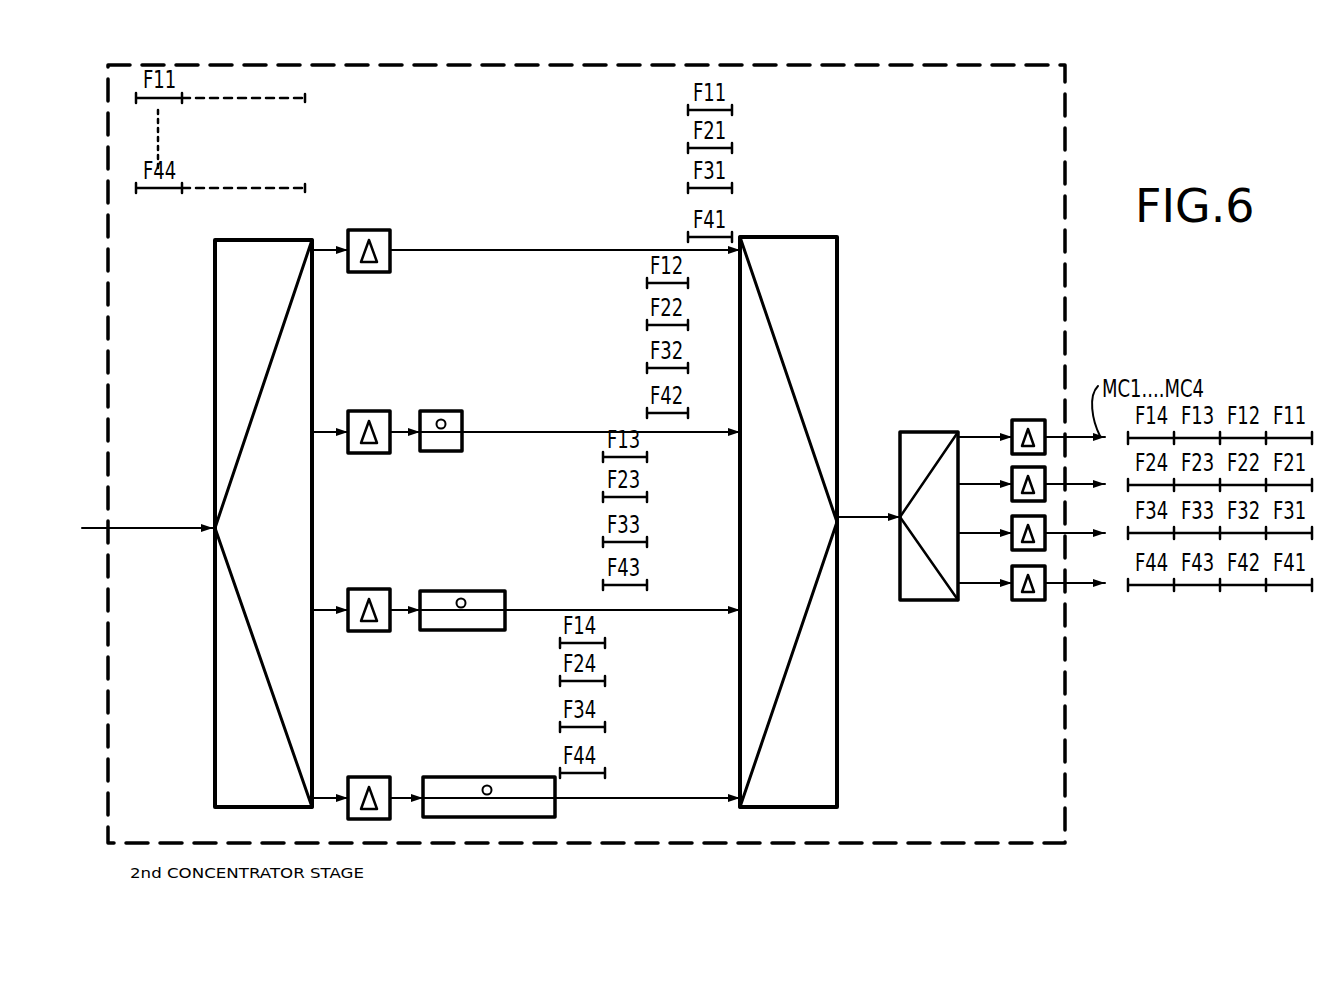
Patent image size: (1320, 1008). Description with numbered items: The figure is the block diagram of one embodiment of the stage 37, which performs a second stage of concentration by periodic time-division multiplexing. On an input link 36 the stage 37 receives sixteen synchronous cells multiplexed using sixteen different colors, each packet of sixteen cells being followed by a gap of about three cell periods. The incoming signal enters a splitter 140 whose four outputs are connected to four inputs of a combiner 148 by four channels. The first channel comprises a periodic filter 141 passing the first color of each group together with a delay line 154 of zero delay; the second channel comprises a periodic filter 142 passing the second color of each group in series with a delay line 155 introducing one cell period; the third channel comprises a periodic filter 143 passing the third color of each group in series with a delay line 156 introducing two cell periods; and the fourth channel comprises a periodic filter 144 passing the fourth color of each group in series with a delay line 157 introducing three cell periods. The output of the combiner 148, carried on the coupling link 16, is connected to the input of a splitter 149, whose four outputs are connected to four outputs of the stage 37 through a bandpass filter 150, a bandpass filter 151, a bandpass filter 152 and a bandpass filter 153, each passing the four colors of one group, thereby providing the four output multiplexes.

The coupling output link 16 is at (869, 485).
The input link 36 is at (94, 527).
The stage 37 is at (1066, 130).
The splitter 140 is at (226, 287).
The periodic filter 141 is at (362, 231).
The periodic filter 142 is at (364, 412).
The periodic filter 143 is at (364, 590).
The periodic filter 144 is at (364, 778).
The combiner 148 is at (838, 235).
The splitter 149 is at (920, 431).
The bandpass filter 150 is at (1028, 420).
The bandpass filter 151 is at (1012, 478).
The bandpass filter 152 is at (1012, 528).
The bandpass filter 153 is at (1012, 576).
The delay line 154 is at (463, 254).
The delay line 155 is at (463, 424).
The delay line 156 is at (505, 594).
The delay line 157 is at (556, 815).